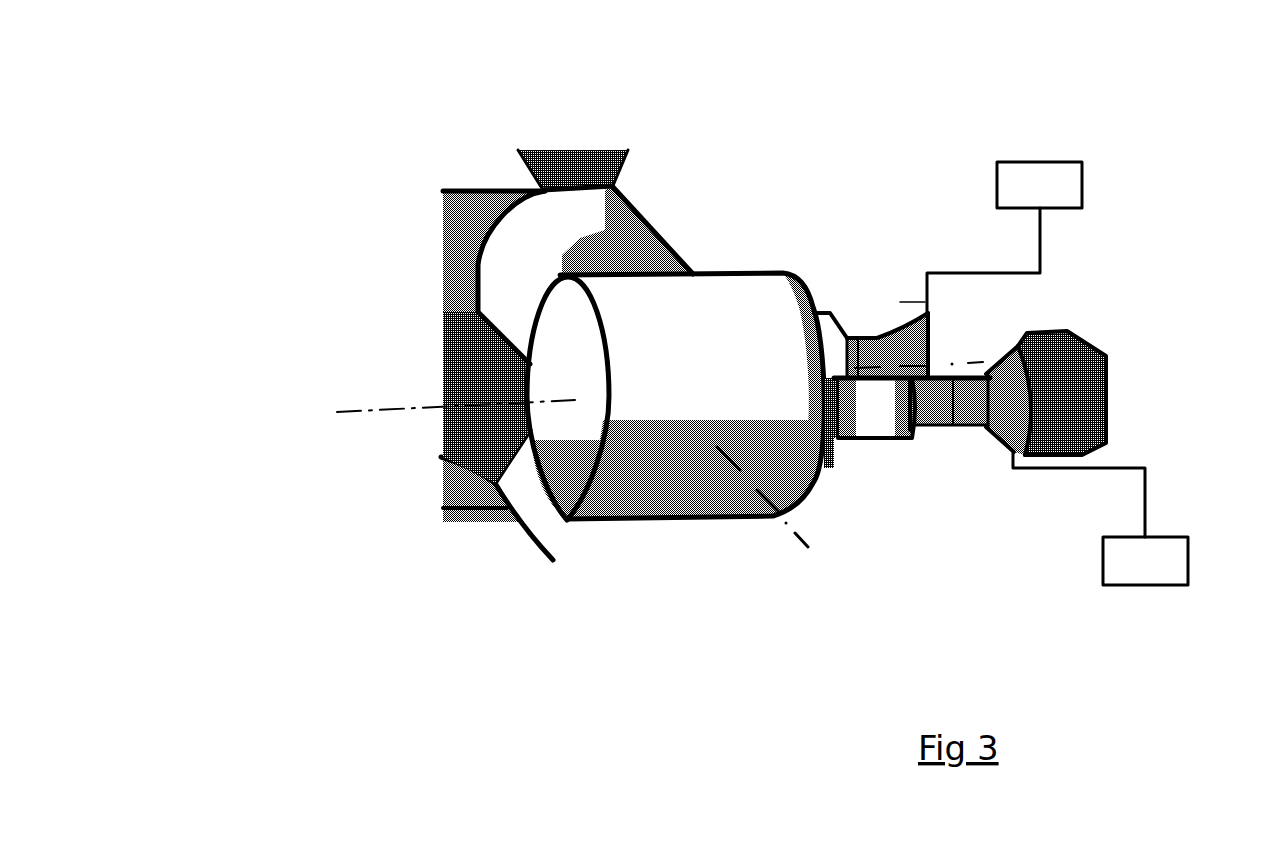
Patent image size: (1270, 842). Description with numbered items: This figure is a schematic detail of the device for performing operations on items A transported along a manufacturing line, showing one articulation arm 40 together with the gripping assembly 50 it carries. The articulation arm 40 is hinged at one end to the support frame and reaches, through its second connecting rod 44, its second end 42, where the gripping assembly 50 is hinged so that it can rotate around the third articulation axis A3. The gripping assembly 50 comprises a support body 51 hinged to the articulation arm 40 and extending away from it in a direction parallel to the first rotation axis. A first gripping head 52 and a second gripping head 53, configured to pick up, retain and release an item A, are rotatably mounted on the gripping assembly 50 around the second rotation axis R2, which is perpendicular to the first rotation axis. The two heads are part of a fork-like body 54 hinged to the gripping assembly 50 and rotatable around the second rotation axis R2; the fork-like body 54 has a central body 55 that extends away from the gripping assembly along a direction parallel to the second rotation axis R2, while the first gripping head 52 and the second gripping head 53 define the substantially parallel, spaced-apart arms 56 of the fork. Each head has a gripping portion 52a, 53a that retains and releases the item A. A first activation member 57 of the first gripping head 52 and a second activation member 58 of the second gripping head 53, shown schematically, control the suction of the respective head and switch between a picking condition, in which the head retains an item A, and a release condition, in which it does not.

The articulation arm 40 is at (460, 298).
The second end 42 is at (502, 220).
The second connecting rod 44 is at (473, 230).
The gripping assembly 50 is at (723, 338).
The support body 51 is at (653, 427).
The first gripping head 52 is at (981, 405).
The gripping portion 52a is at (1000, 362).
The second gripping head 53 is at (864, 340).
The gripping portion 53a is at (922, 323).
The fork-like body 54 is at (872, 403).
The central body 55 is at (828, 345).
The arms of the fork 56 is at (849, 350).
The first activation member 57 is at (1100, 518).
The second activation member 58 is at (1004, 237).
The item A is at (1083, 348).
The third articulation axis A3 is at (793, 540).
The second rotation axis R2 is at (338, 410).